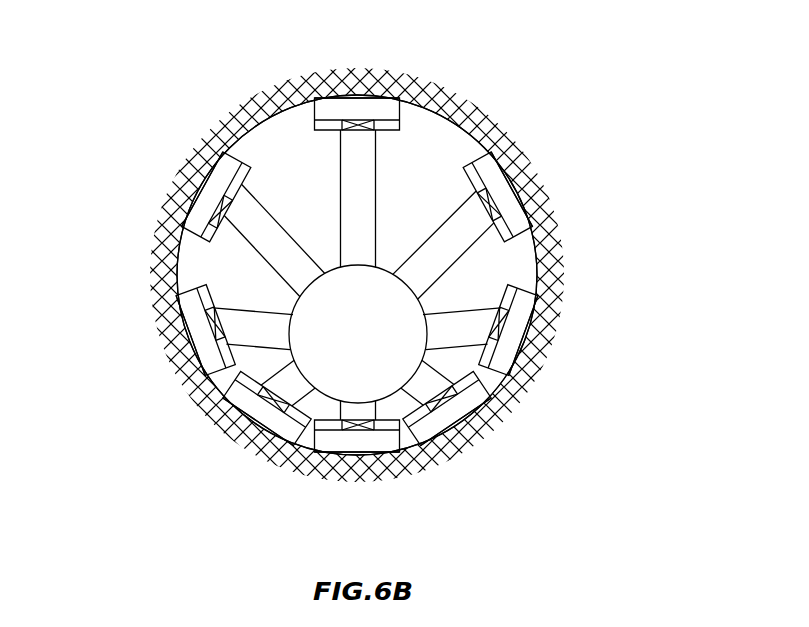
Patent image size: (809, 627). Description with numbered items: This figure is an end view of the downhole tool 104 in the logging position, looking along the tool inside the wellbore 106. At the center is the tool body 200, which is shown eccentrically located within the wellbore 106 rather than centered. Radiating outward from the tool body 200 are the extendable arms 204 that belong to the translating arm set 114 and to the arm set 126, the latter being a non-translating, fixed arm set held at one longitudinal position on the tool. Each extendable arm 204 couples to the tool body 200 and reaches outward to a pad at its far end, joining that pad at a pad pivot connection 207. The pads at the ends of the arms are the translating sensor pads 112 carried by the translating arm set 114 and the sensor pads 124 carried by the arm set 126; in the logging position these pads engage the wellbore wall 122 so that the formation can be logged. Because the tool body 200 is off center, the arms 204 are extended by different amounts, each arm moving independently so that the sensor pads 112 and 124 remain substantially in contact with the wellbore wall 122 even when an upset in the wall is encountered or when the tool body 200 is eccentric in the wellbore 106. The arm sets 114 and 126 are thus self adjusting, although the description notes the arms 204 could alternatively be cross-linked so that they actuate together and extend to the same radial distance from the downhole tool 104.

The downhole tool 104 is at (447, 292).
The wellbore 106 is at (310, 157).
The translating sensor pad 112 is at (200, 160).
The translating arm set 114 is at (224, 153).
The wellbore wall 122 is at (460, 131).
The sensor pad 124 is at (380, 100).
The arm set 126 is at (357, 76).
The tool body 200 is at (379, 336).
The extendable arm 204 is at (277, 226).
The pad pivot connection 207 is at (358, 124).